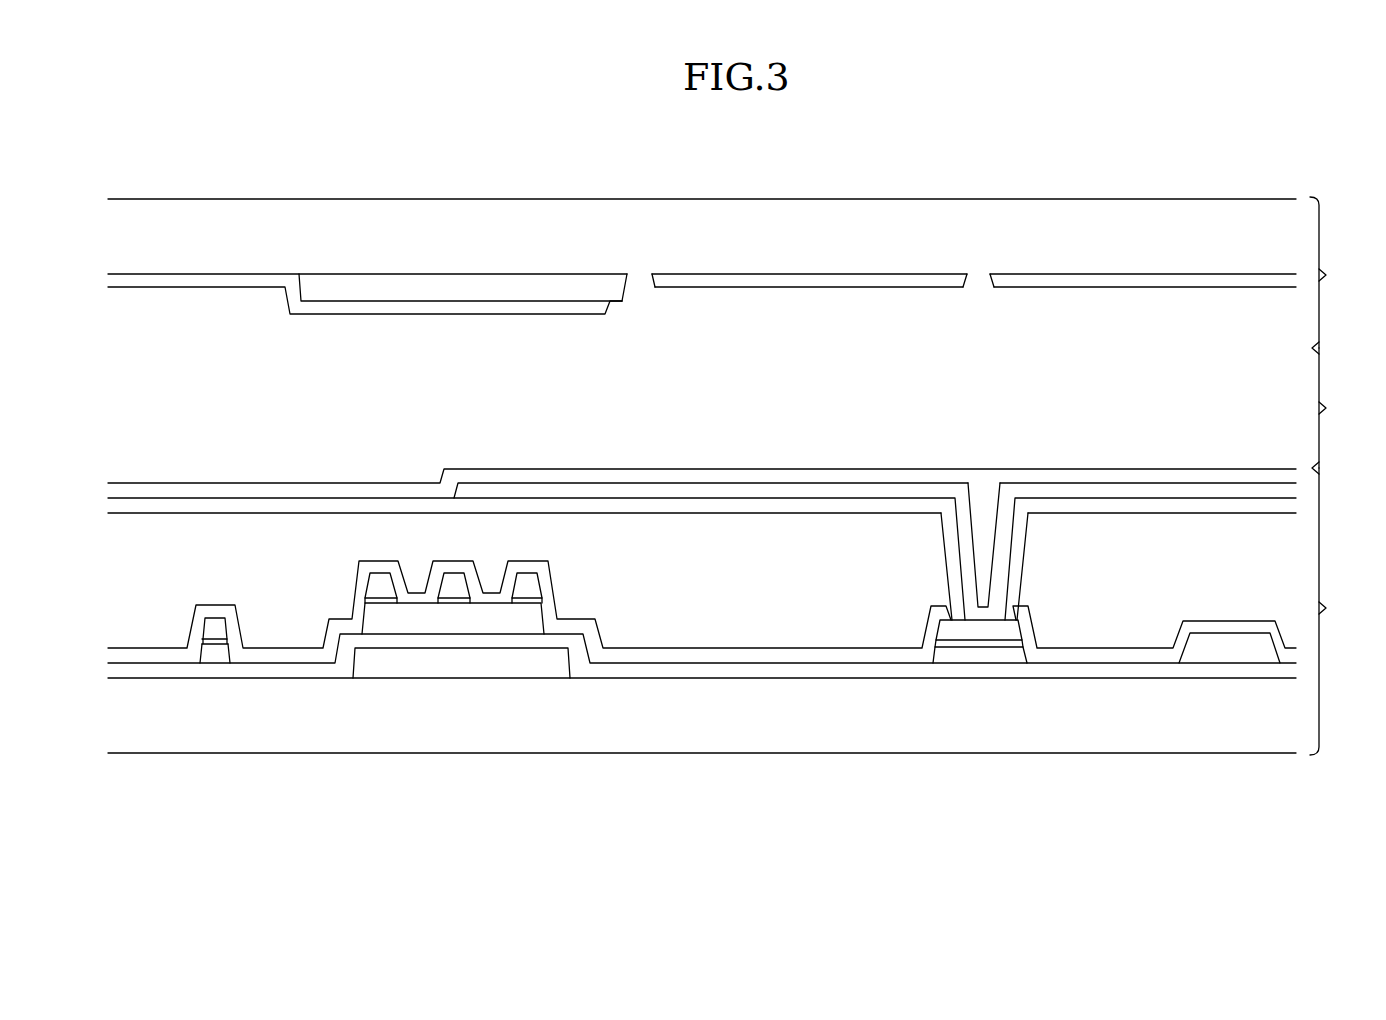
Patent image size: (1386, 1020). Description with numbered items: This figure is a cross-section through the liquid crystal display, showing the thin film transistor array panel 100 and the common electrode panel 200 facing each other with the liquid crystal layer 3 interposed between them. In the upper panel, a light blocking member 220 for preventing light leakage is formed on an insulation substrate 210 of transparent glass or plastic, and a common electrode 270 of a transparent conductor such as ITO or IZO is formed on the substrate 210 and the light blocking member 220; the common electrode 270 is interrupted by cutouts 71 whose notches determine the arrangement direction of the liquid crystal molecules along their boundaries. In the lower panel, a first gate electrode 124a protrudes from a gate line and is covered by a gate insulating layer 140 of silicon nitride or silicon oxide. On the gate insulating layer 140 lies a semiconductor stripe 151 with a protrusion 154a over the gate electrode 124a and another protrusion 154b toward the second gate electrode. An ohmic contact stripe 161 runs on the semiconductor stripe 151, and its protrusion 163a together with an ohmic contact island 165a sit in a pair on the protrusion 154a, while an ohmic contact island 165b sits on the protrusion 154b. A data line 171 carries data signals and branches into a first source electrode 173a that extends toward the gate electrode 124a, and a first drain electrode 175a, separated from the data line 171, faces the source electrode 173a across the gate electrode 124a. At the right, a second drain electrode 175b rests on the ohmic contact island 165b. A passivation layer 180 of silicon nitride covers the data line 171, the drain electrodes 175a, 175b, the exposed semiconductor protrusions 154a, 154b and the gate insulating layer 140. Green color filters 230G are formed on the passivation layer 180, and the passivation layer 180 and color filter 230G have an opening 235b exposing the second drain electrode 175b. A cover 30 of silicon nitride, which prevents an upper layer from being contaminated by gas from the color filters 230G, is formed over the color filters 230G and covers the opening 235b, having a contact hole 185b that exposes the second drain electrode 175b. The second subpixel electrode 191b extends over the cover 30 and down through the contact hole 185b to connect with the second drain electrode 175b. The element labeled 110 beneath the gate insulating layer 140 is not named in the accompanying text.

The insulation substrate 210 is at (610, 230).
The common electrode panel 200 is at (737, 272).
The common electrode 270 is at (348, 306).
The light blocking member 220 is at (478, 288).
The cutout 71 is at (651, 284).
The liquid crystal layer 3 is at (1328, 405).
The thin film transistor array panel 100 is at (1338, 608).
The cover 30 is at (278, 505).
The second subpixel electrode 191b is at (612, 497).
The contact hole 185b is at (1005, 540).
The opening 235b is at (1022, 527).
The green color filter 230G is at (780, 581).
The passivation layer 180 is at (377, 566).
The gate insulating layer 140 is at (835, 670).
The lower substrate 110 is at (1200, 725).
The first gate electrode 124a is at (425, 668).
The protrusion 154a is at (400, 618).
The protrusion 163a is at (383, 602).
The ohmic contact island 165a is at (457, 602).
The first source electrode 173a is at (375, 587).
The first drain electrode 175a is at (462, 583).
The data line 171 is at (208, 633).
The ohmic contact stripe 161 is at (218, 643).
The semiconductor stripe 151 is at (215, 658).
The second drain electrode 175b is at (1007, 632).
The ohmic contact island 165b is at (960, 647).
The protrusion 154b is at (978, 655).